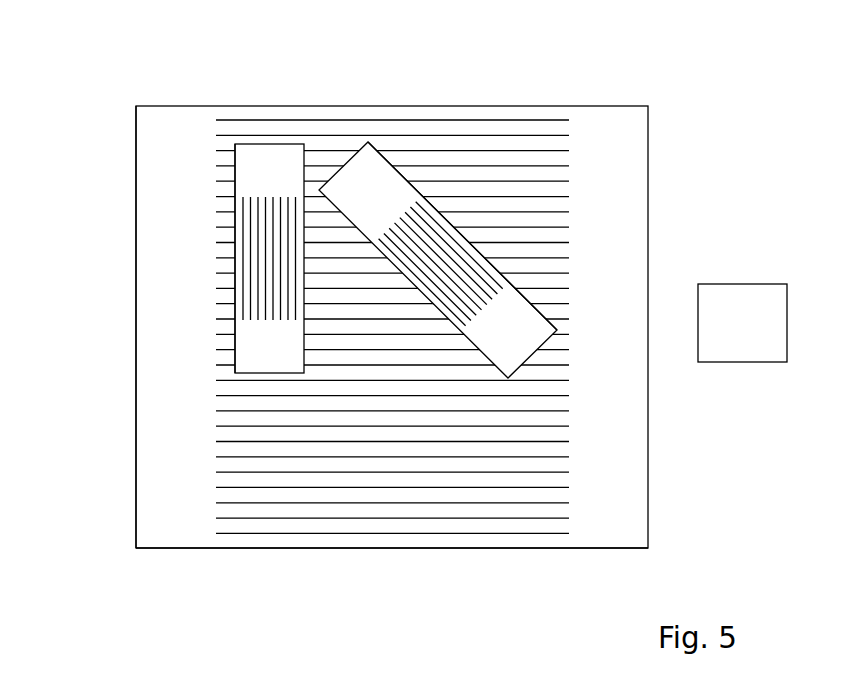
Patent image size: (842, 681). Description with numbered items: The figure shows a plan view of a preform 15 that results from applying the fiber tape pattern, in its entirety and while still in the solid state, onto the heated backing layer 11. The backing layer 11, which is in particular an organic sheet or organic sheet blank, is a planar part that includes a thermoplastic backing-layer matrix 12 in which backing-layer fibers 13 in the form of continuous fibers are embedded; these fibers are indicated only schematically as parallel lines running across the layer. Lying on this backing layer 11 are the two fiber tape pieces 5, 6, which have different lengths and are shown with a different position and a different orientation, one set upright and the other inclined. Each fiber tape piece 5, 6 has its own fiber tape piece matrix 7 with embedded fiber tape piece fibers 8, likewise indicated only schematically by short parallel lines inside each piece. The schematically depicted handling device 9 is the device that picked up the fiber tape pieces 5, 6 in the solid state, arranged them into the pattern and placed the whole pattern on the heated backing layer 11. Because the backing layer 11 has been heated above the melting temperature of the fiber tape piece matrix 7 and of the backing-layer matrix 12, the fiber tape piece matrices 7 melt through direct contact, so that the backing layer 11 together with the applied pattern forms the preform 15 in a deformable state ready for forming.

The preform 15 is at (116, 84).
The backing layer 11 is at (134, 170).
The backing-layer matrix 12 is at (145, 512).
The backing-layer fibers 13 is at (325, 533).
The fiber tape piece matrix 7 is at (270, 158).
The fiber tape piece fibers 8 is at (243, 265).
The fiber tape piece 5 is at (428, 186).
The fiber tape piece 6 is at (226, 340).
The handling device 9 is at (750, 290).